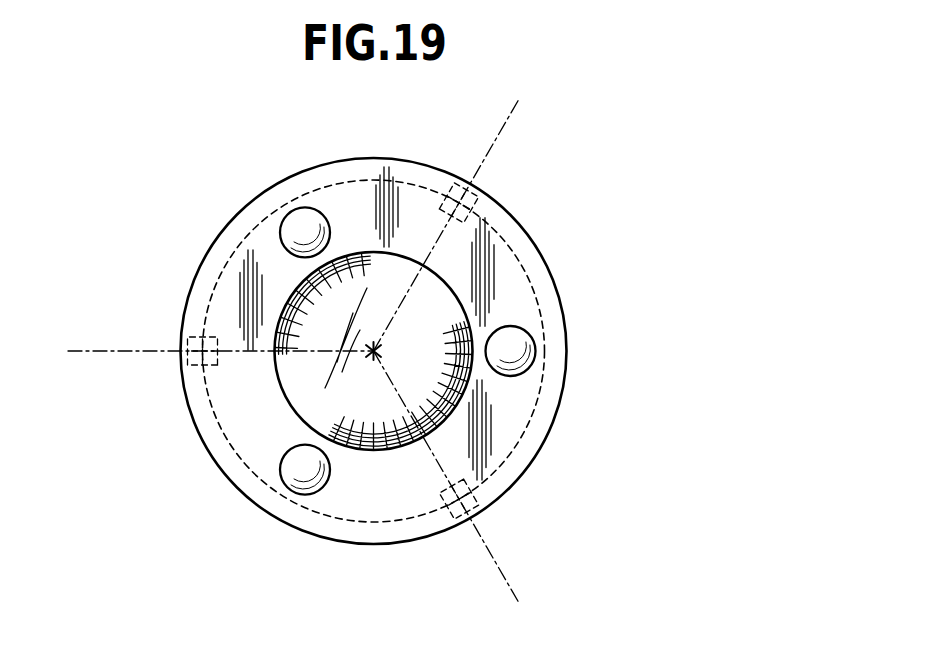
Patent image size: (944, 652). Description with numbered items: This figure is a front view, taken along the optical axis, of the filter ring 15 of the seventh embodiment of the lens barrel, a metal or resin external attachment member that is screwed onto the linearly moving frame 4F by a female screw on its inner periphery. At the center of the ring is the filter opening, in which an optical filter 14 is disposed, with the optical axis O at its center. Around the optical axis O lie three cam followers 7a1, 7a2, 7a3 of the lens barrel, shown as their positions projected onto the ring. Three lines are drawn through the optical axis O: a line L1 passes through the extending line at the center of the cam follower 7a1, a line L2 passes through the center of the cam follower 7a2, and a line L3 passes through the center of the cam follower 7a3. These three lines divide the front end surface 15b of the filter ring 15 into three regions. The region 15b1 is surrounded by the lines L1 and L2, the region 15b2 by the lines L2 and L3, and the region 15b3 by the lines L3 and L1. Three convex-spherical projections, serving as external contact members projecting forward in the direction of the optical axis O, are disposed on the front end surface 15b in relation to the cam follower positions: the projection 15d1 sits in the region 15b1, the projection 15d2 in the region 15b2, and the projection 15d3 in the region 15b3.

The filter ring 15 is at (562, 398).
The linearly moving frame 4F is at (525, 273).
The optical filter 14 is at (350, 423).
The optical axis O is at (375, 351).
The line L1 is at (492, 150).
The line L2 is at (490, 550).
The line L3 is at (136, 352).
The cam follower 7a1 is at (472, 207).
The cam follower 7a2 is at (488, 501).
The cam follower 7a3 is at (187, 343).
The projection 15d1 is at (512, 343).
The projection 15d2 is at (303, 473).
The projection 15d3 is at (298, 233).
The front end surface 15b is at (410, 207).
The region 15b1 is at (505, 420).
The region 15b2 is at (250, 432).
The region 15b3 is at (343, 212).